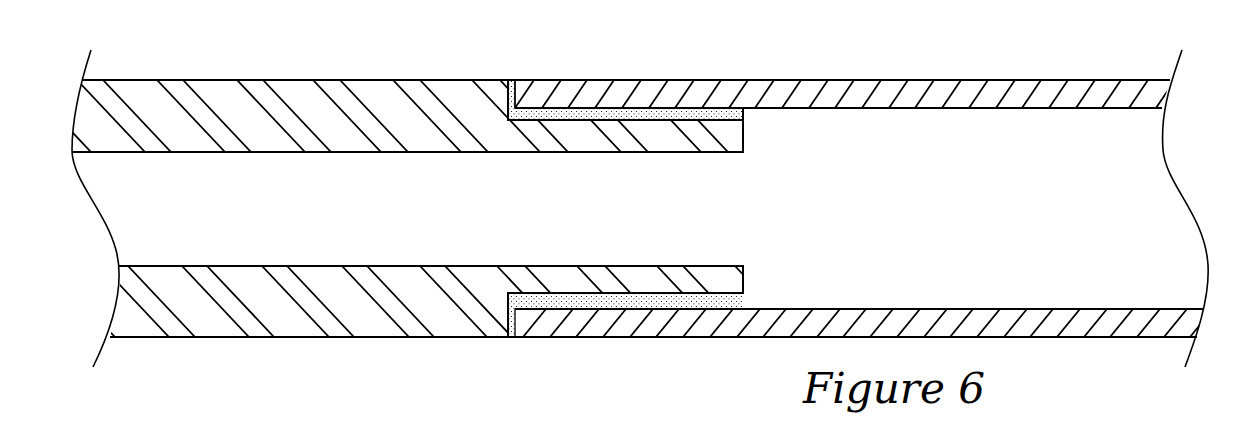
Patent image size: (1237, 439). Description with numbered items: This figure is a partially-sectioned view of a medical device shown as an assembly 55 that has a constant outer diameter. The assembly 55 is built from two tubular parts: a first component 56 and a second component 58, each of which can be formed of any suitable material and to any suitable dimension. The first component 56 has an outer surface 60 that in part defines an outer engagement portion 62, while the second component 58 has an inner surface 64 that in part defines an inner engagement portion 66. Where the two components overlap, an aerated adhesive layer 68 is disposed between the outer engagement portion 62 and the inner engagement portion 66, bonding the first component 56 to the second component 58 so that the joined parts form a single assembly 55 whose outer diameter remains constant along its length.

The assembly 55 is at (487, 57).
The first component 56 is at (288, 92).
The second component 58 is at (1093, 93).
The outer surface 60 is at (370, 80).
The outer engagement portion 62 is at (690, 118).
The inner surface 64 is at (963, 118).
The inner engagement portion 66 is at (575, 108).
The aerated adhesive layer 68 is at (642, 300).